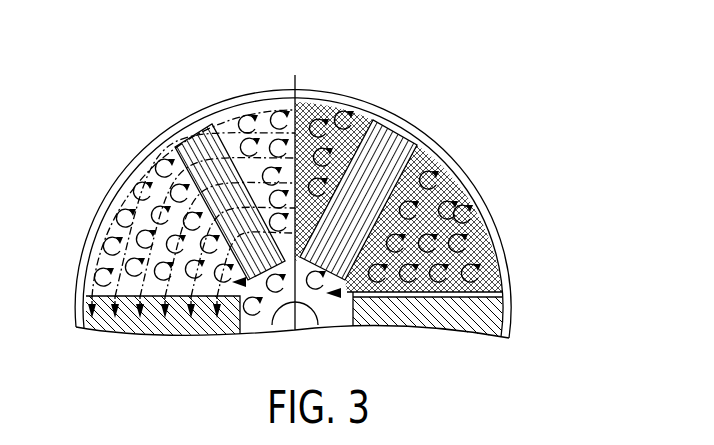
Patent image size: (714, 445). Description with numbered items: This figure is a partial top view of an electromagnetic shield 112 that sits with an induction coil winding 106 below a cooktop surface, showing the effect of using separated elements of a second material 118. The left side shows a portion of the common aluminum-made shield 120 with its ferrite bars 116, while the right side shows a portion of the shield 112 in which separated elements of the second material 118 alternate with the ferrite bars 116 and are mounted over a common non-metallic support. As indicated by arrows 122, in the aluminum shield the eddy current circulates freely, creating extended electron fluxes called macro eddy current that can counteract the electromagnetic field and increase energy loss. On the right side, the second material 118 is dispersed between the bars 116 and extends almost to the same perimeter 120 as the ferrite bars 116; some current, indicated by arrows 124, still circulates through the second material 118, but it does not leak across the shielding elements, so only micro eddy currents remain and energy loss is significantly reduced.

The induction coil winding 106 is at (94, 236).
The electromagnetic shield 112 is at (222, 83).
The ferrite bars 116 is at (470, 245).
The second material 118 is at (405, 310).
The aluminum shield / perimeter 120 is at (509, 282).
The arrows indicating macro eddy current 122 is at (172, 146).
The arrows indicating micro eddy current 124 is at (362, 130).